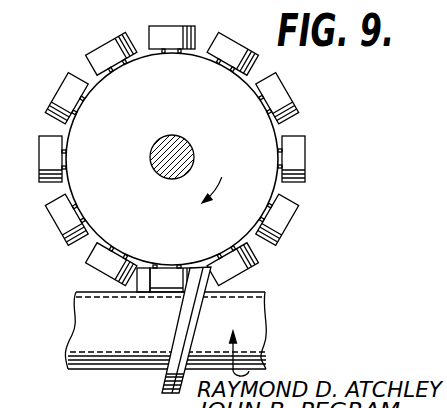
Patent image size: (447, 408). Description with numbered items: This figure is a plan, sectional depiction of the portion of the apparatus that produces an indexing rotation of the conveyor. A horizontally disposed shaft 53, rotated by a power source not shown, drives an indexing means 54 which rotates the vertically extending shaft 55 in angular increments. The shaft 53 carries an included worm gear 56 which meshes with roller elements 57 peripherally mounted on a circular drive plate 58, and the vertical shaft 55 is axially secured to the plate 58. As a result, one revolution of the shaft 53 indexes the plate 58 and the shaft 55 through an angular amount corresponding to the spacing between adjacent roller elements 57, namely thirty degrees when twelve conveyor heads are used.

The horizontally disposed shaft 53 is at (252, 313).
The indexing means 54 is at (90, 278).
The vertically extending shaft 55 is at (175, 142).
The worm gear 56 is at (162, 380).
The roller elements 57 is at (108, 54).
The circular drive plate 58 is at (268, 133).